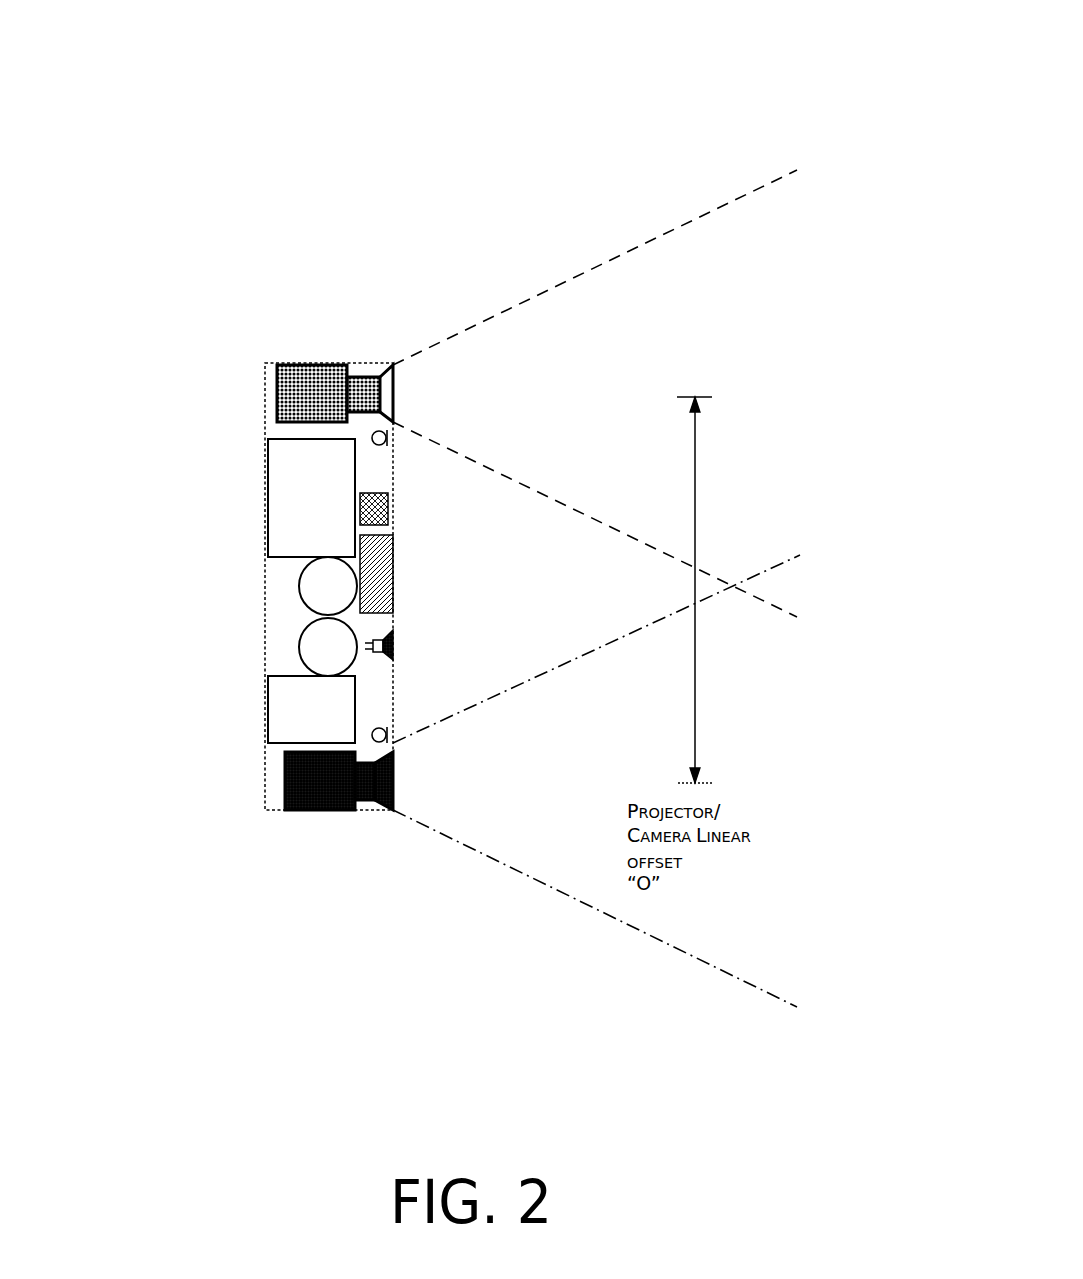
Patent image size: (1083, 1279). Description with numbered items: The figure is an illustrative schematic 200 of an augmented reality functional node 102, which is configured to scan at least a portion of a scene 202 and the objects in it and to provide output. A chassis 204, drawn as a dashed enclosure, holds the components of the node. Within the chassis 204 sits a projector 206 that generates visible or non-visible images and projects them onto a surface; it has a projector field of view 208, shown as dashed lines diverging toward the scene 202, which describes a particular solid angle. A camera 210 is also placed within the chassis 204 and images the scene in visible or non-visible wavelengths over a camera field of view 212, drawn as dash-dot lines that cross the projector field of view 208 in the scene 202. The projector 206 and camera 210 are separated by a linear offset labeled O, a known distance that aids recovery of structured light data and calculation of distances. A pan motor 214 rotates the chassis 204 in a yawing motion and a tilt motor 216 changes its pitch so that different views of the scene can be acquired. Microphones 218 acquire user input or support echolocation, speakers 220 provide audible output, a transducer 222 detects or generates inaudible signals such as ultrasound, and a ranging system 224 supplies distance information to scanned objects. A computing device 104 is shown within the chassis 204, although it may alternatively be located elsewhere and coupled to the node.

The illustrative schematic 200 is at (756, 36).
The augmented reality functional node 102 is at (297, 363).
The chassis 204 is at (325, 362).
The projector 206 is at (312, 395).
The computing device 104 is at (310, 498).
The microphones 218 is at (400, 432).
The transducer 222 is at (395, 495).
The ranging system 224 is at (382, 572).
The pan motor 214 is at (297, 588).
The tilt motor 216 is at (296, 648).
The speakers 220 is at (395, 648).
The camera 210 is at (286, 811).
The projector field of view 208 is at (598, 267).
The camera field of view 212 is at (552, 889).
The scene 202 is at (832, 588).